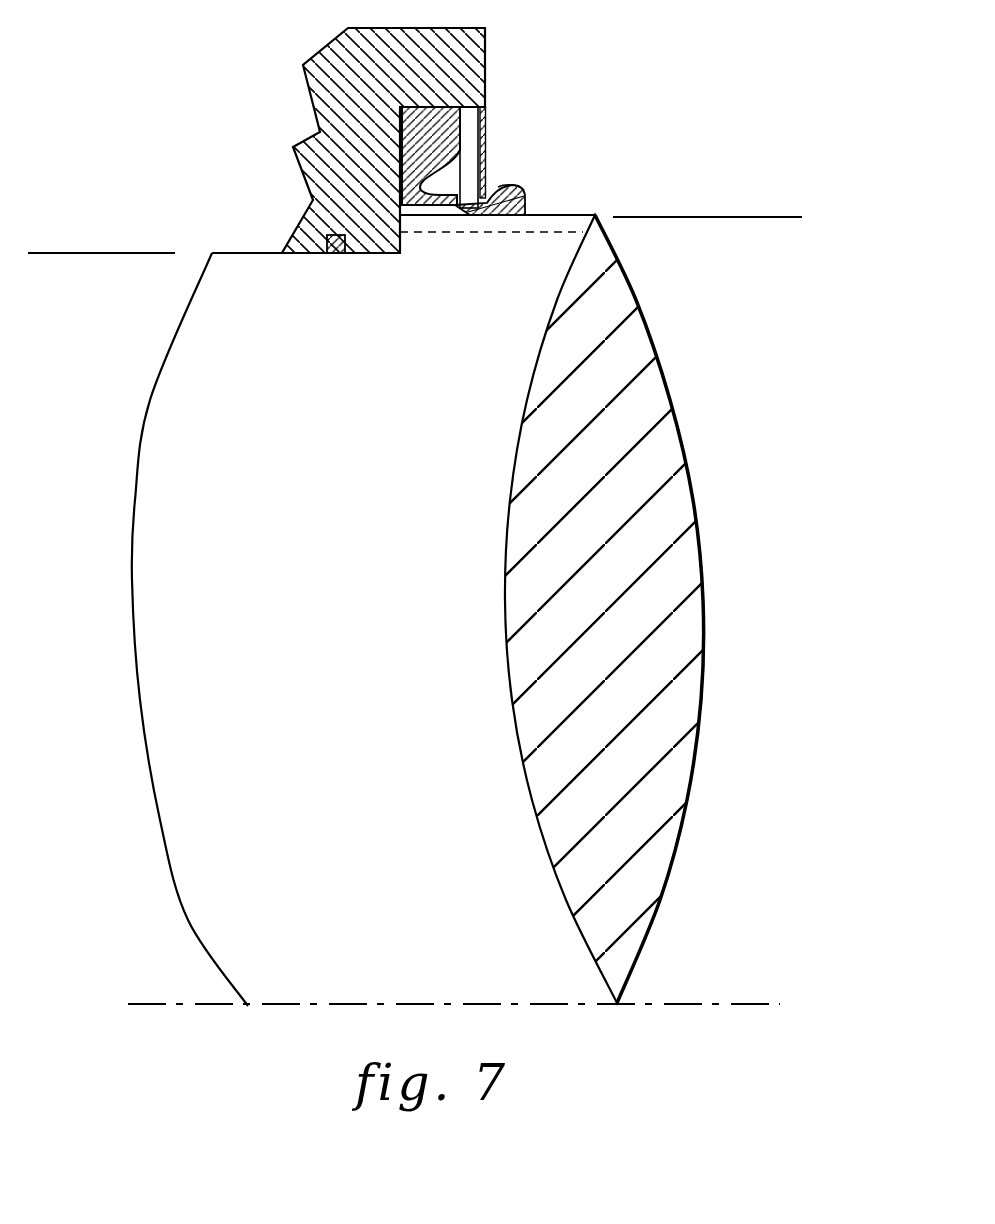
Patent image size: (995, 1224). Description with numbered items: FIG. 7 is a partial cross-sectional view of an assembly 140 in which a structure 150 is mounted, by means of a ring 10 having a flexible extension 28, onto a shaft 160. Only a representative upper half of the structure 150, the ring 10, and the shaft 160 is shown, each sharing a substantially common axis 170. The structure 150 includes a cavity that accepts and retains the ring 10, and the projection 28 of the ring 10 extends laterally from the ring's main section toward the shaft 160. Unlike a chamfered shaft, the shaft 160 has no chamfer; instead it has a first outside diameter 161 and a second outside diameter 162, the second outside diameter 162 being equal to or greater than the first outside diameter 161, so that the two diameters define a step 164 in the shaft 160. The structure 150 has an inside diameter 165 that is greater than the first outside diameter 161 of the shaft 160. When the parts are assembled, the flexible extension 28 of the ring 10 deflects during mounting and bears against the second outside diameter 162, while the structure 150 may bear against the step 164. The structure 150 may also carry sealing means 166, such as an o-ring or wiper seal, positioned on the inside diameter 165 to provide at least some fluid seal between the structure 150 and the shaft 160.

The structure 150 is at (378, 27).
The assembly 140 is at (584, 89).
The ring 10 is at (510, 176).
The projection 28 is at (527, 188).
The step 164 is at (403, 254).
The sealing means 166 is at (318, 255).
The inside diameter 165 is at (360, 253).
The first outside diameter 161 is at (75, 253).
The second outside diameter 162 is at (755, 217).
The shaft 160 is at (702, 560).
The common axis 170 is at (358, 1007).